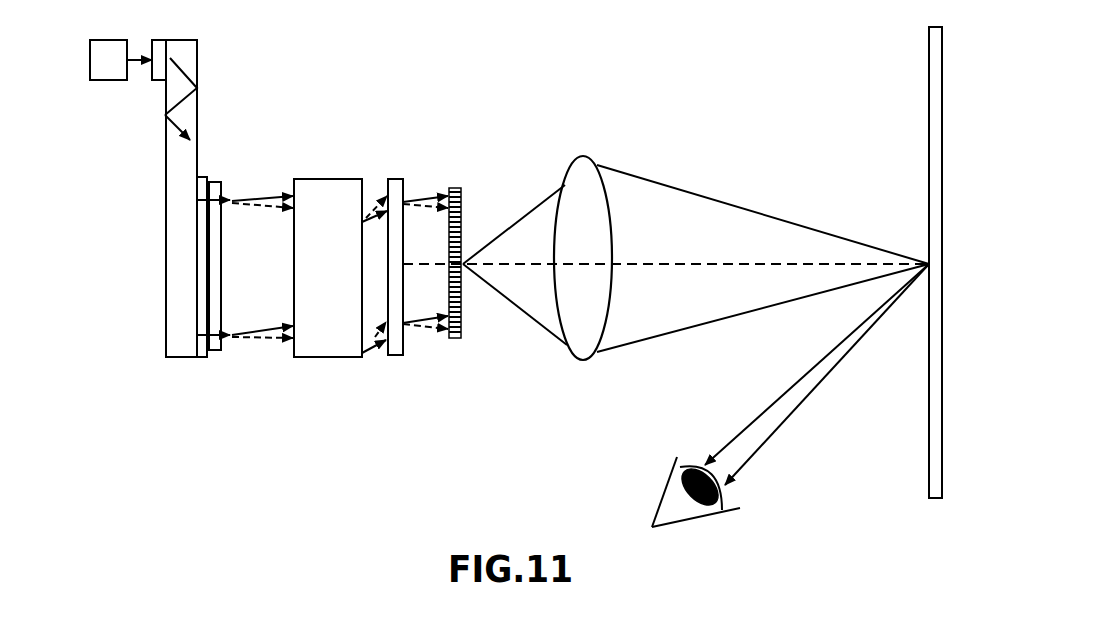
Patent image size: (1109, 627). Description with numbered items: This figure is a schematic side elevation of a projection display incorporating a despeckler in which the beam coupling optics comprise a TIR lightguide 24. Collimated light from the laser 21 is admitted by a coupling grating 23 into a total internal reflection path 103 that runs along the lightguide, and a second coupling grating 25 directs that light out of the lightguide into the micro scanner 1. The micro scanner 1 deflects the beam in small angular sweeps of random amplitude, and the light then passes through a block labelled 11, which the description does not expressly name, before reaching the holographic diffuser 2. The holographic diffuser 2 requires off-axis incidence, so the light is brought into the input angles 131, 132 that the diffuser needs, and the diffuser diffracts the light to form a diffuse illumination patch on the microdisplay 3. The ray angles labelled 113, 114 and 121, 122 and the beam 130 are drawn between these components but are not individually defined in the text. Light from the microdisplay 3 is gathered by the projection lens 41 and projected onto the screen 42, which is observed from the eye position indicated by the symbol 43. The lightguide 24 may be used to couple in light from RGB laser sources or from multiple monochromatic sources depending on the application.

The micro scanner 1 is at (182, 310).
The holographic diffuser 2 is at (395, 357).
The microdisplay 3 is at (461, 238).
The optical block 11 is at (327, 357).
The laser 21 is at (123, 80).
The coupling grating 23 is at (160, 43).
The TIR lightguide 24 is at (167, 200).
The second coupling grating 25 is at (202, 175).
The projection lens 41 is at (580, 363).
The screen 42 is at (927, 85).
The eye position 43 is at (742, 500).
The TIR path 103 is at (187, 75).
The first light beam 113 is at (293, 205).
The second light beam 114 is at (293, 224).
The first diffracted beam 121 is at (470, 162).
The second diffracted beam 122 is at (477, 181).
The converging light beam 130 is at (530, 323).
The input angle 131 is at (720, 178).
The input angle 132 is at (647, 297).